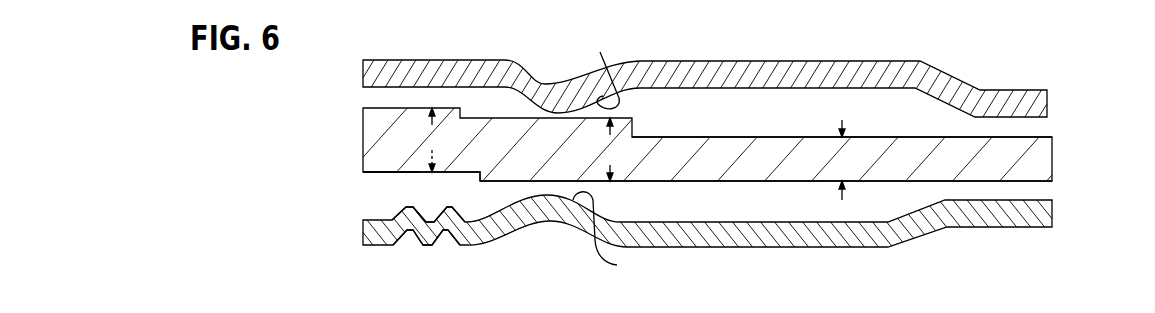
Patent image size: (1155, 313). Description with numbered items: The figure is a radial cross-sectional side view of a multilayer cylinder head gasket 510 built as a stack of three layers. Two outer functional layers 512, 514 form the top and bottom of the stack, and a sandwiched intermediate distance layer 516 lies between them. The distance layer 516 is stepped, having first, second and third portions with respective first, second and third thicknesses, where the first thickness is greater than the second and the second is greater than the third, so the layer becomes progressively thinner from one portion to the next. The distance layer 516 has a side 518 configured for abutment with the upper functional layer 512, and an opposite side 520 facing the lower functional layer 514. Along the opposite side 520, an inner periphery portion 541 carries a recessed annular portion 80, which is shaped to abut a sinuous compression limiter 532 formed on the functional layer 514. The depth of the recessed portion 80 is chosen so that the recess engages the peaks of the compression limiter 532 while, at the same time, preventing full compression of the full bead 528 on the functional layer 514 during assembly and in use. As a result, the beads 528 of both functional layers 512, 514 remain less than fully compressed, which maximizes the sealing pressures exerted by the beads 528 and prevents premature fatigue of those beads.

The multilayer gasket 510 is at (927, 50).
The outer functional layer 512 is at (645, 61).
The outer functional layer 514 is at (667, 248).
The intermediate distance layer 516 is at (363, 125).
The side of distance layer 518 is at (730, 137).
The opposite side of distance layer 520 is at (700, 182).
The full bead 528 is at (611, 154).
The sinuous compression limiter 532 is at (428, 252).
The inner periphery portion 541 is at (374, 173).
The recessed annular portion 80 is at (387, 172).